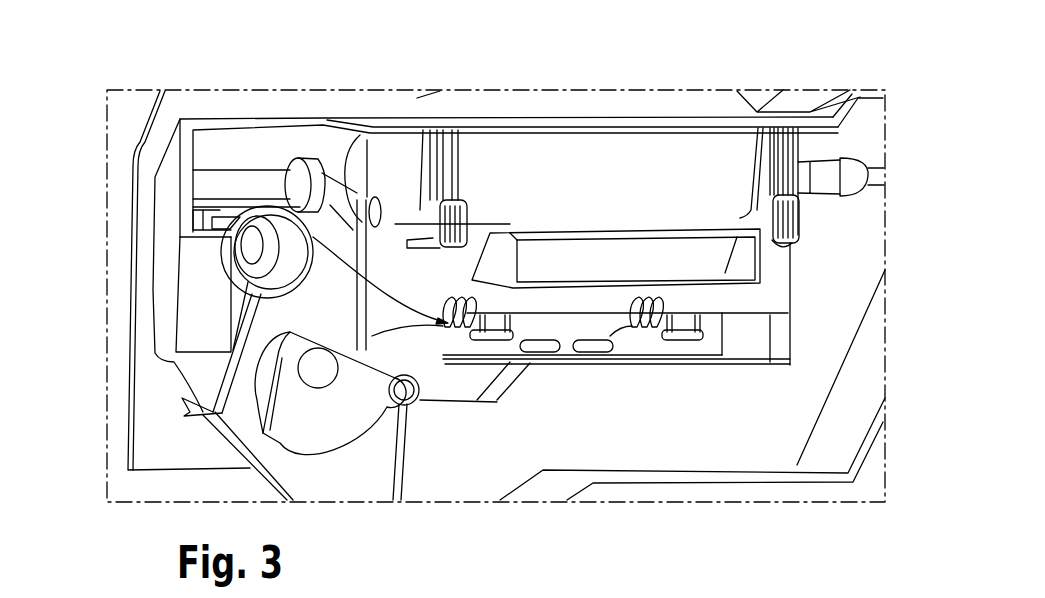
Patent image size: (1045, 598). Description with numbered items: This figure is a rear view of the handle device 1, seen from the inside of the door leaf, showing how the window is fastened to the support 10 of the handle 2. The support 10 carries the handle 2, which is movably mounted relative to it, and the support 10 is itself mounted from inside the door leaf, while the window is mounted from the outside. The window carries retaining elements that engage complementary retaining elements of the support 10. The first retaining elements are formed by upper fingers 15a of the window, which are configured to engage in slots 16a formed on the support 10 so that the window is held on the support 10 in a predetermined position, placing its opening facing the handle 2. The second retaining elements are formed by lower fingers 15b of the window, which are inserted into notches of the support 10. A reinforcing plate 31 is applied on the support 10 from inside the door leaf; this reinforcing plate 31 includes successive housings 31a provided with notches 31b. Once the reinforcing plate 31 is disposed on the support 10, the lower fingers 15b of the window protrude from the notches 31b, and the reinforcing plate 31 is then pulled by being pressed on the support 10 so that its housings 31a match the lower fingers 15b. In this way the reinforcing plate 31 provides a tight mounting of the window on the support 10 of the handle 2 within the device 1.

The device 1 is at (135, 98).
The handle 2 is at (572, 233).
The support 10 is at (899, 123).
The upper fingers 15a is at (793, 230).
The lower fingers 15b is at (433, 291).
The slots 16a is at (455, 200).
The reinforcing plate 31 is at (725, 333).
The housings 31a is at (443, 325).
The notches 31b is at (490, 334).